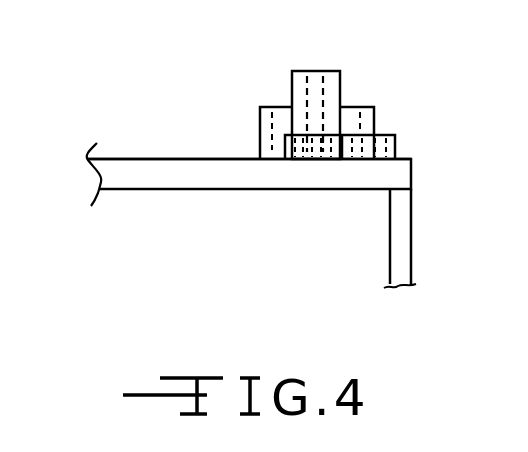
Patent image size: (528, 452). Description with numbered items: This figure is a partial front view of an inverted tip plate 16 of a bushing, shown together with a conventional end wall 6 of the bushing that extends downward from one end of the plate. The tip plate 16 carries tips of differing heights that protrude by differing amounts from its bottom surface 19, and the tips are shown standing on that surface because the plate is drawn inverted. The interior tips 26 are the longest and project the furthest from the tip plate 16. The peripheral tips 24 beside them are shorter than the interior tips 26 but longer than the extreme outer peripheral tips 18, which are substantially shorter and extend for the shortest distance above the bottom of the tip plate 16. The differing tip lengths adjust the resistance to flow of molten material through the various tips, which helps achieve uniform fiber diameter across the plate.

The tip plate 16 is at (115, 163).
The bottom surface 19 is at (191, 159).
The end wall 6 is at (398, 253).
The peripheral tip 24 is at (282, 107).
The interior tip 26 is at (315, 71).
The extreme outer peripheral tip 18 is at (333, 137).